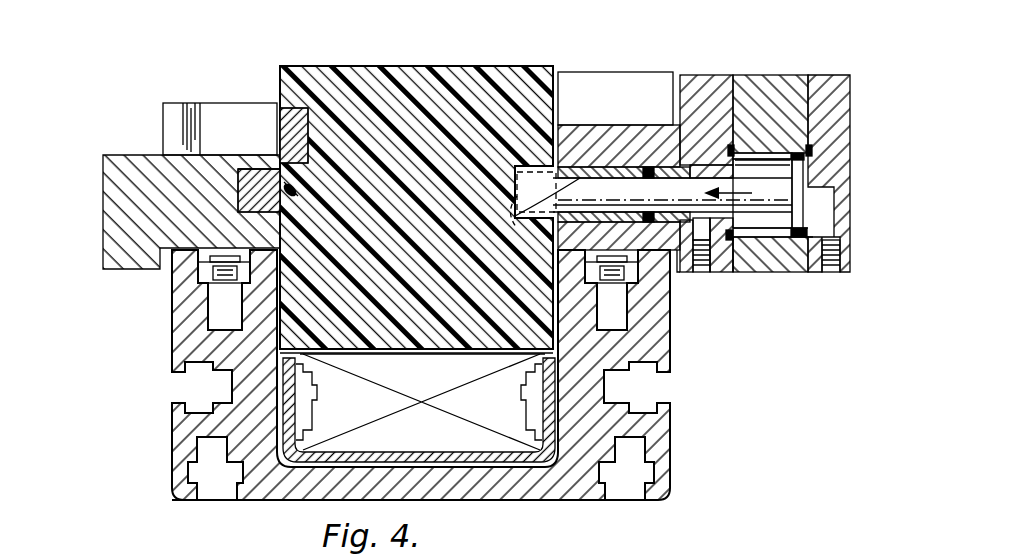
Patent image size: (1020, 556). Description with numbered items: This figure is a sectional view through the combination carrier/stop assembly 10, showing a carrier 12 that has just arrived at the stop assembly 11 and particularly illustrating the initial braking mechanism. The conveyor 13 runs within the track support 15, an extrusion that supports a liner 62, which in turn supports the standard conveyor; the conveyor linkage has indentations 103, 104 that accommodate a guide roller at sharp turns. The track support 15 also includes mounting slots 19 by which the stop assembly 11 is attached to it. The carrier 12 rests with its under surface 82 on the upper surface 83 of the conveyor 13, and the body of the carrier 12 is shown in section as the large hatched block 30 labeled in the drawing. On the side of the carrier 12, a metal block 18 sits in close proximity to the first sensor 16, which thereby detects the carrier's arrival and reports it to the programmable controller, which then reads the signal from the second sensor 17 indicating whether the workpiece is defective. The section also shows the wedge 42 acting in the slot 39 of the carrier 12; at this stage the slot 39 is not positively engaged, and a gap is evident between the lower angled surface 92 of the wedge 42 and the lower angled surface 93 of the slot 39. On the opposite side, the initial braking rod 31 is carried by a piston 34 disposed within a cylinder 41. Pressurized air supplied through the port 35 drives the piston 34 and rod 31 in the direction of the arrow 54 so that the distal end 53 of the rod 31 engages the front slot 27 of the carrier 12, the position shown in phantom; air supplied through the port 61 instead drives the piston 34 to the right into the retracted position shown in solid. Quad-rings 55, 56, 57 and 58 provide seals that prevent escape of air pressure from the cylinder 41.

The combination carrier/stop assembly 10 is at (257, 46).
The stop assembly 11 is at (117, 150).
The carrier 12 is at (416, 186).
The conveyor 13 is at (332, 480).
The track support 15 is at (680, 452).
The sensor 16 is at (180, 103).
The sensor 17 is at (641, 50).
The metal block 18 is at (300, 112).
The mounting slots 19 is at (222, 305).
The front slot 27 is at (515, 178).
The block 30 is at (440, 38).
The initial braking rod 31 is at (752, 190).
The piston 34 is at (752, 230).
The port 35 is at (830, 274).
The slot 39 is at (252, 169).
The cylinder 41 is at (743, 274).
The wedge 42 is at (250, 172).
The distal end 53 is at (523, 222).
The arrow 54 is at (730, 190).
The quad-ring 55 is at (797, 234).
The quad-ring 56 is at (788, 152).
The quad-ring 57 is at (727, 274).
The quad-ring 58 is at (648, 168).
The port 61 is at (706, 274).
The liner 62 is at (522, 464).
The under surface 82 is at (380, 354).
The upper surface 83 is at (456, 352).
The lower angled surface 92 is at (286, 212).
The lower angled surface 93 is at (298, 190).
The indentation 103 is at (318, 403).
The indentation 104 is at (521, 403).